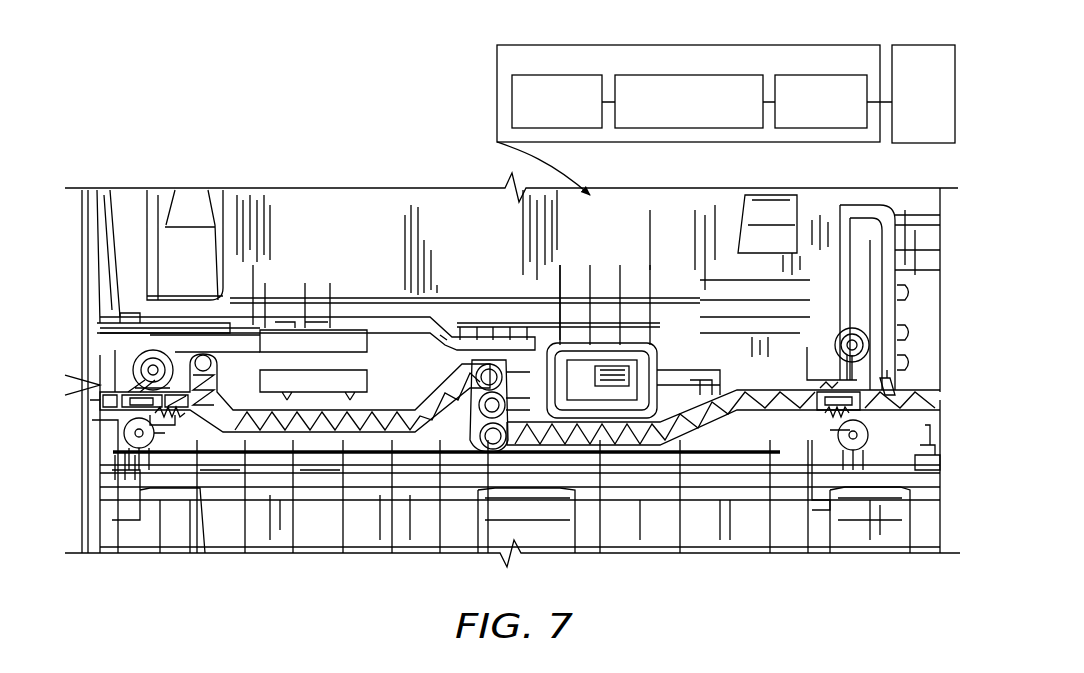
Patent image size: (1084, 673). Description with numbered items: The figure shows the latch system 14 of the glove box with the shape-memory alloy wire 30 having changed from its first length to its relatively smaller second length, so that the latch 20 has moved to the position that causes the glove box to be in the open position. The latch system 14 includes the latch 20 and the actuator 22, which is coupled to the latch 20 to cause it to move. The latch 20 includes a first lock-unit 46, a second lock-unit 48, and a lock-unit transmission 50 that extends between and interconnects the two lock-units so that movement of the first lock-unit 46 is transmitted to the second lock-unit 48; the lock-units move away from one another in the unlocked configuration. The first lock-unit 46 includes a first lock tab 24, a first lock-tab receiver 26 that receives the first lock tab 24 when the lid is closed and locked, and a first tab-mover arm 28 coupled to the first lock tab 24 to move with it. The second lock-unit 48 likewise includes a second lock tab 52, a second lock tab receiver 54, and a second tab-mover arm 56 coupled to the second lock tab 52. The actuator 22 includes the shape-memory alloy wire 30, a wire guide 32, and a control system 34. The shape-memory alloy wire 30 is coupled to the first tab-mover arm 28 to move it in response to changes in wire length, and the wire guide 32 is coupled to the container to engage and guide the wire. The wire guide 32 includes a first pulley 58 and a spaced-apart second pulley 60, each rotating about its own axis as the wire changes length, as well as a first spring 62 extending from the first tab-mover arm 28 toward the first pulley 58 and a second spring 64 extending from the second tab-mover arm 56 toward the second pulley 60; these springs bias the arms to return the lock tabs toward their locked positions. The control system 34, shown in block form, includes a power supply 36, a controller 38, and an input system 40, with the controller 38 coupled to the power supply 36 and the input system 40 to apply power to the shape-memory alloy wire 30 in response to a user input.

The latch system 14 is at (268, 113).
The latch 20 is at (492, 200).
The actuator 22 is at (860, 18).
The first lock tab 24 is at (80, 450).
The first lock-tab receiver 26 is at (82, 372).
The first tab-mover arm 28 is at (427, 395).
The shape-memory alloy wire 30 is at (738, 400).
The wire guide 32 is at (818, 602).
The control system 34 is at (550, 45).
The power supply 36 is at (815, 75).
The controller 38 is at (668, 142).
The input system 40 is at (562, 75).
The first lock-unit 46 is at (332, 400).
The second lock-unit 48 is at (685, 345).
The lock-unit transmission 50 is at (512, 390).
The second lock tab 52 is at (930, 470).
The second lock tab receiver 54 is at (900, 470).
The second tab-mover arm 56 is at (690, 372).
The first pulley 58 is at (145, 448).
The second pulley 60 is at (853, 450).
The first spring 62 is at (172, 432).
The second spring 64 is at (835, 425).